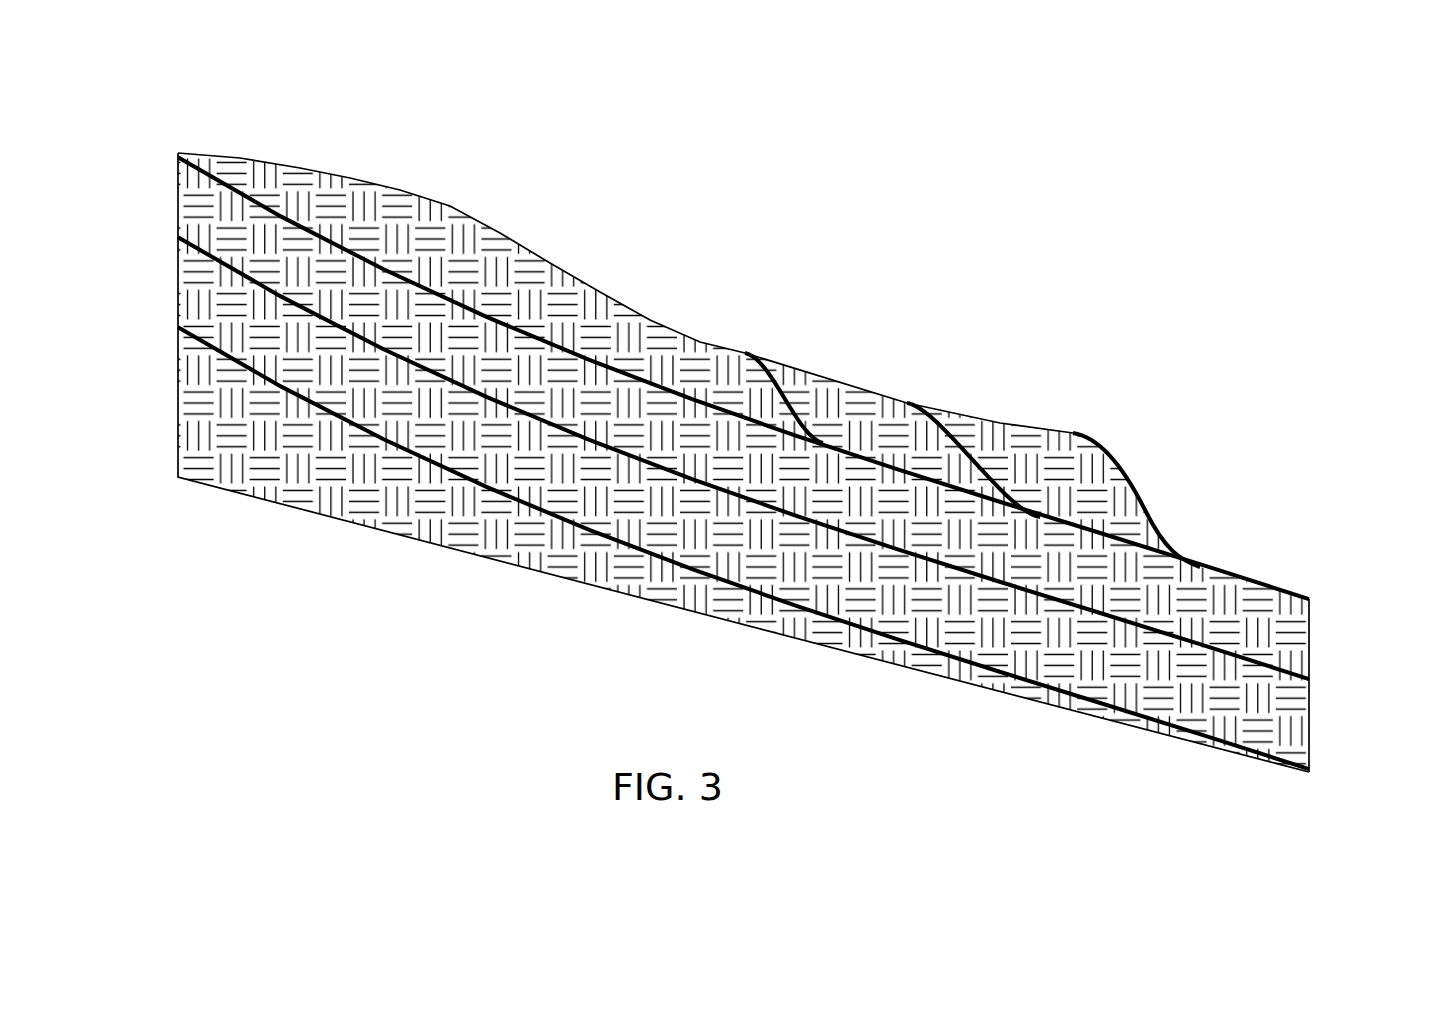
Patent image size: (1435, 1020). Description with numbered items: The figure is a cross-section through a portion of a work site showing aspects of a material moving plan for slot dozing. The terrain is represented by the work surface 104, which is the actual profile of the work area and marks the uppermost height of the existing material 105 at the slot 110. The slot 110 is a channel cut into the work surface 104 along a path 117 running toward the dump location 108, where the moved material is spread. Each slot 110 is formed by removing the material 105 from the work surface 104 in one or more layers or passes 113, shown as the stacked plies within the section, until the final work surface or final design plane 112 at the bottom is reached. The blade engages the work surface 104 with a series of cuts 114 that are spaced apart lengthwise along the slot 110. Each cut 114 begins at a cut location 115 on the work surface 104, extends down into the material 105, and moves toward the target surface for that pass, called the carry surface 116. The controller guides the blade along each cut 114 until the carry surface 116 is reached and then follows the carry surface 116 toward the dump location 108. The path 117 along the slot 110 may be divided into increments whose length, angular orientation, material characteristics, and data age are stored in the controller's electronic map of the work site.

The work surface 104 is at (455, 208).
The material 105 is at (323, 210).
The dump location 108 is at (1348, 601).
The slot 110 is at (1198, 460).
The final design plane 112 is at (292, 505).
The passes 113 is at (195, 340).
The cut 114 is at (787, 368).
The cut location 115 is at (747, 352).
The carry surface 116 is at (1310, 710).
The path 117 is at (671, 203).